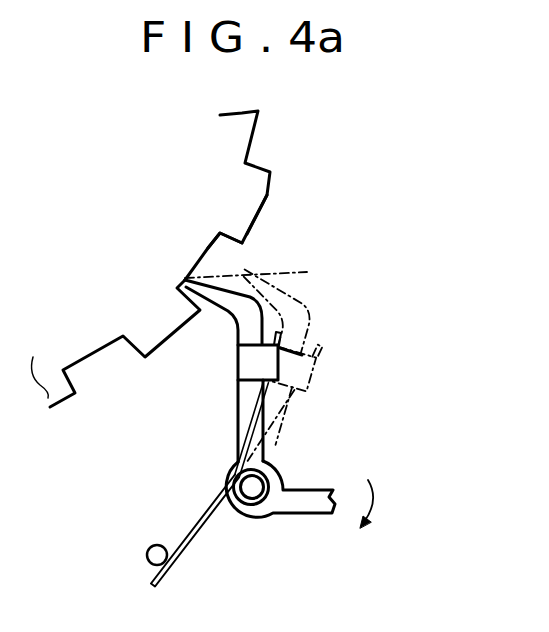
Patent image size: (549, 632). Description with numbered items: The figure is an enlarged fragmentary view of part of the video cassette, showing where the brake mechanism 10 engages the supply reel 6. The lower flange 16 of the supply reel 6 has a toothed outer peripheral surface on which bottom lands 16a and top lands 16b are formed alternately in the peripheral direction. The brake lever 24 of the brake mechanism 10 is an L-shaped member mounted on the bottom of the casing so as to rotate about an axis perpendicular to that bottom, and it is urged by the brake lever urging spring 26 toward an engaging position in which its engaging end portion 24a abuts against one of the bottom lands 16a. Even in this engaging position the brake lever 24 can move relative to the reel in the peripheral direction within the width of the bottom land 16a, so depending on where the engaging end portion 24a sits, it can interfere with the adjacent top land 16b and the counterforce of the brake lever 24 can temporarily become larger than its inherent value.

The supply reel 6 is at (271, 195).
The lower flange 16 is at (97, 322).
The bottom lands 16a is at (210, 248).
The top lands 16b is at (268, 196).
The brake mechanism 10 is at (296, 438).
The brake lever 24 is at (307, 502).
The engaging end portion 24a is at (222, 300).
The brake lever urging spring 26 is at (188, 557).